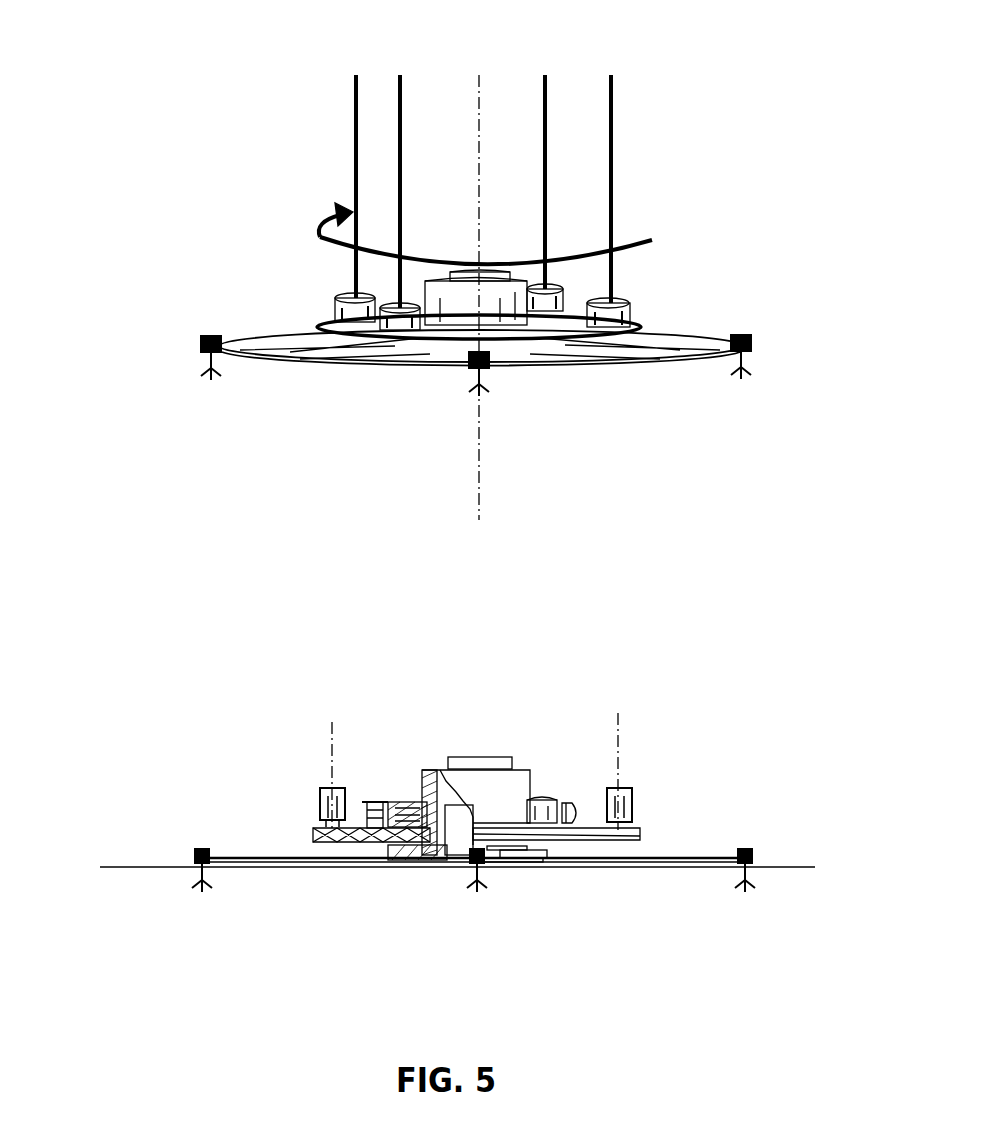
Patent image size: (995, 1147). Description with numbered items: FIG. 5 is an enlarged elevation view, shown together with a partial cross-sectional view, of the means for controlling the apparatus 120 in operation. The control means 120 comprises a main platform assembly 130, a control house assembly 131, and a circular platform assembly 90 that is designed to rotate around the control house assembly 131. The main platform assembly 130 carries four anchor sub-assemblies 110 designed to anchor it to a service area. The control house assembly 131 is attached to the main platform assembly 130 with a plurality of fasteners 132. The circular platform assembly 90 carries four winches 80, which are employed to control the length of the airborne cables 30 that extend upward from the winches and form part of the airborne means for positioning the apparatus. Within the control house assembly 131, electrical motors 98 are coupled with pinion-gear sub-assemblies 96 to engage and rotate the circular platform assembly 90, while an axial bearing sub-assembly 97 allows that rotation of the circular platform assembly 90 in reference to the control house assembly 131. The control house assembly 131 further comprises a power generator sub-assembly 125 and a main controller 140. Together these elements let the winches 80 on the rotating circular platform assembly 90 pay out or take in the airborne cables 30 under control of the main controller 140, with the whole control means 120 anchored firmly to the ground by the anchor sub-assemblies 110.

The airborne cables 30 is at (356, 122).
The winches 80 is at (333, 320).
The circular platform assembly 90 is at (657, 360).
The pinion-gear sub-assemblies 96 is at (568, 800).
The axial bearing sub-assembly 97 is at (392, 848).
The electrical motors 98 is at (405, 800).
The anchor sub-assemblies 110 is at (205, 337).
The means for controlling the apparatus 120 is at (357, 273).
The power generator sub-assembly 125 is at (447, 870).
The main platform assembly 130 is at (448, 357).
The control house assembly 131 is at (430, 770).
The fasteners 132 is at (500, 876).
The main controller 140 is at (528, 268).